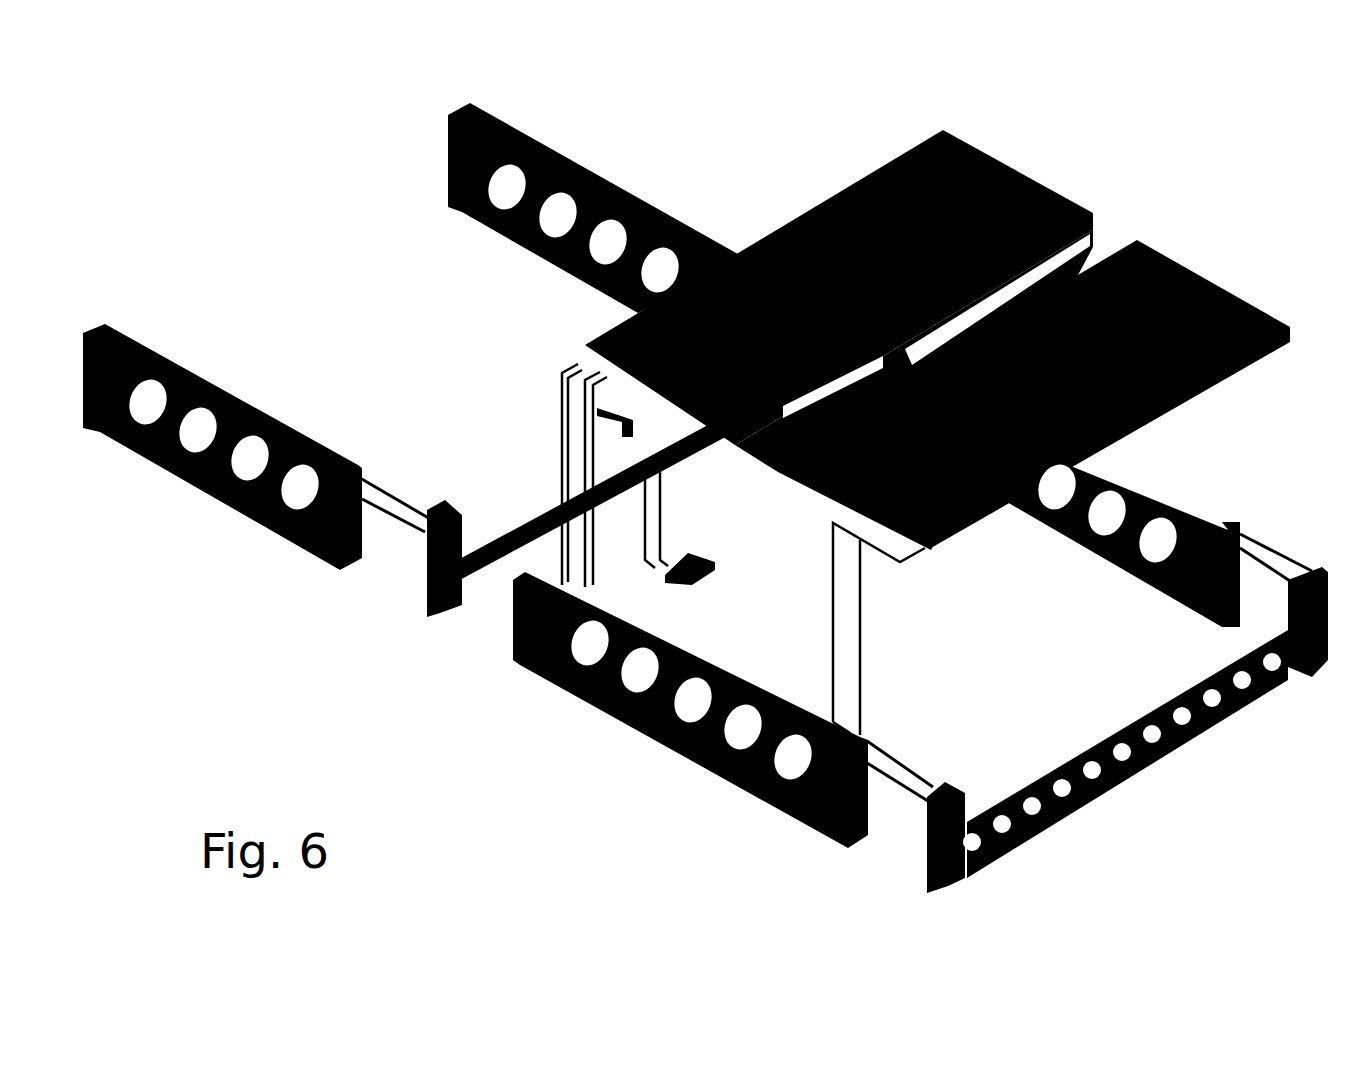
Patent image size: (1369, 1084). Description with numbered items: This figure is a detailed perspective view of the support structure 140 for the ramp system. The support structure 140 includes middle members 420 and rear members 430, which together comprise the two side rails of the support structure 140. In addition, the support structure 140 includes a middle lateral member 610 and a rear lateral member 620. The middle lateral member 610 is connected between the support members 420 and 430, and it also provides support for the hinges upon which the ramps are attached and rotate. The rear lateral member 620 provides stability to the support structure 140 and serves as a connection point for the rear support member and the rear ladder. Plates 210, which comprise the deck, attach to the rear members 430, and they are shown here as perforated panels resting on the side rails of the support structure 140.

The support structure 140 is at (296, 296).
The plates 210 is at (937, 338).
The middle members 420 is at (414, 360).
The rear members 430 is at (920, 666).
The middle lateral member 610 is at (680, 450).
The rear lateral member 620 is at (1125, 754).